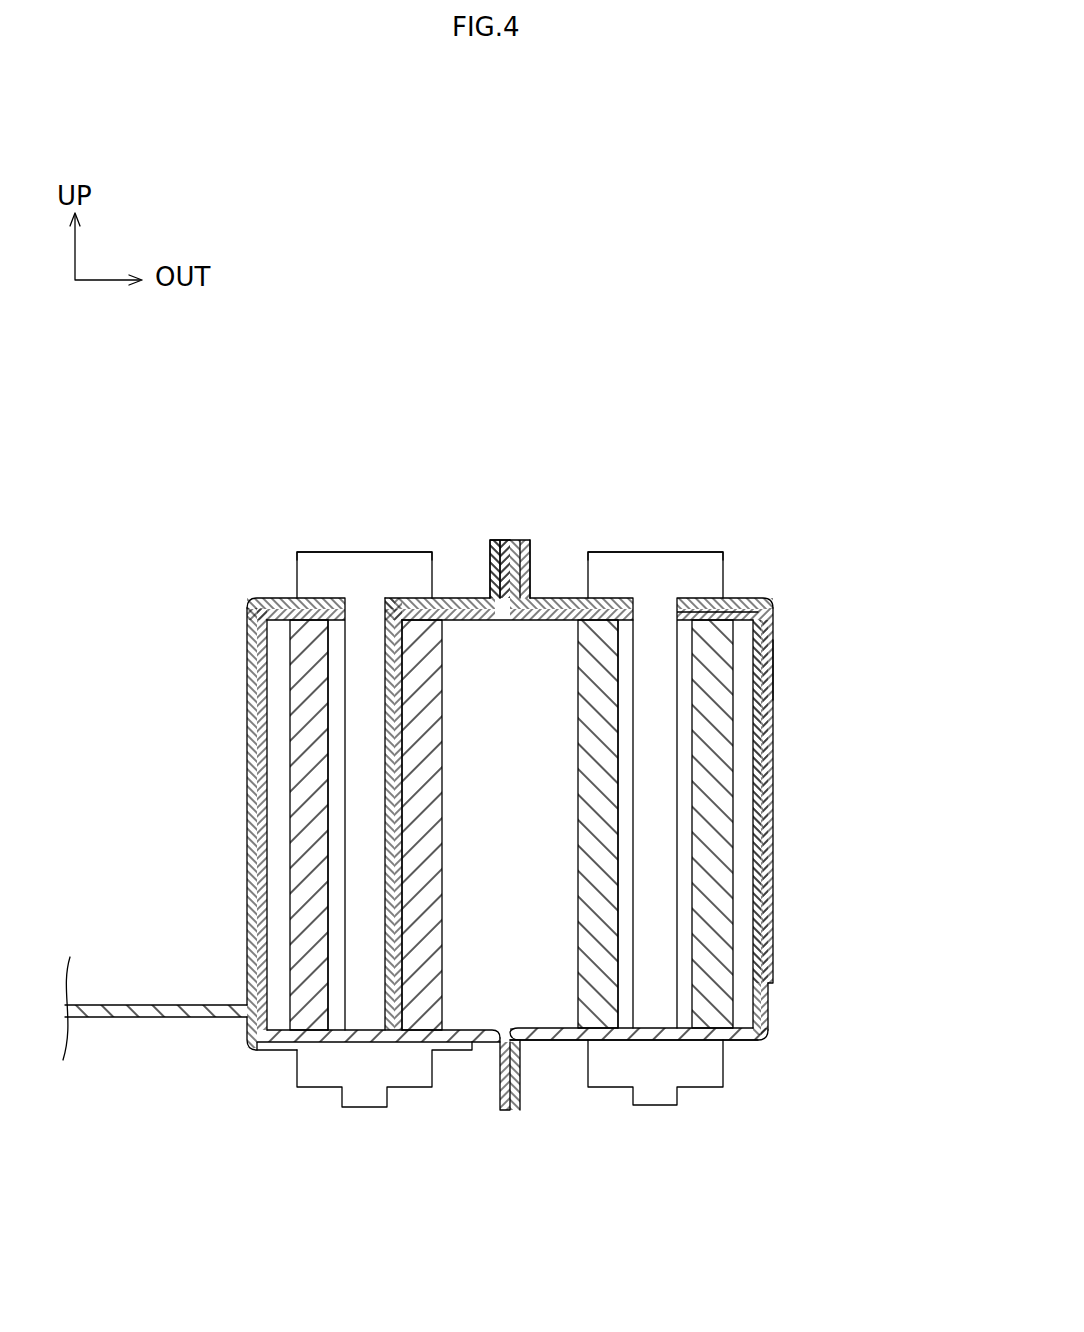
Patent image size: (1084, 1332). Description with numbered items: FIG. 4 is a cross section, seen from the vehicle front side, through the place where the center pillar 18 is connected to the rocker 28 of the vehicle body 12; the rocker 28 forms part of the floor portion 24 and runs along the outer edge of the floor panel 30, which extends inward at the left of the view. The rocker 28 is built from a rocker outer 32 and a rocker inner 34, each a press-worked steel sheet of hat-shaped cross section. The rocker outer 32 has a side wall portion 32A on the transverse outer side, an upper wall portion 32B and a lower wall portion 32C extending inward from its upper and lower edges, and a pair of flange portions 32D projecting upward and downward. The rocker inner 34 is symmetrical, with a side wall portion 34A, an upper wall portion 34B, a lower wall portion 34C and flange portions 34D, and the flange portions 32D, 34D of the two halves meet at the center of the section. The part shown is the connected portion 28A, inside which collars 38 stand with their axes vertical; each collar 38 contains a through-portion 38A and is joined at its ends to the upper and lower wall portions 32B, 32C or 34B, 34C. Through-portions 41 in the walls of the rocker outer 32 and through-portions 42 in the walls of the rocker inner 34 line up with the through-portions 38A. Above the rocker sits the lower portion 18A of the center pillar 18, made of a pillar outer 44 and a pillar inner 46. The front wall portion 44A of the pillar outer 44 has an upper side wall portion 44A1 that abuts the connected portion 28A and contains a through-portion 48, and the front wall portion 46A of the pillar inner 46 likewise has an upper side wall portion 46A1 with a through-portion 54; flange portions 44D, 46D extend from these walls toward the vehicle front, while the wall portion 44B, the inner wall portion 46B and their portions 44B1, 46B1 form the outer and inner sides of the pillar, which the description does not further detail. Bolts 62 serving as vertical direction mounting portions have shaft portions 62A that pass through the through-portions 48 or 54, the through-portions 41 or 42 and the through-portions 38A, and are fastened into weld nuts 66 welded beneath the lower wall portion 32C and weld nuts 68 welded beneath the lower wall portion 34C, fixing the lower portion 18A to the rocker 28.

The vehicle body 12 is at (751, 386).
The center pillar 18 is at (854, 689).
The lower portion 18A is at (773, 728).
The floor portion 24 is at (106, 753).
The rocker 28 is at (484, 843).
The connected portion 28A is at (742, 1041).
The floor panel 30 is at (96, 1017).
The rocker outer 32 is at (715, 785).
The side wall portion 32A is at (765, 1001).
The upper wall portion 32B is at (532, 622).
The lower wall portion 32C is at (550, 1030).
The flange portions 32D is at (512, 540).
The rocker inner 34 is at (377, 827).
The side wall portion 34A is at (270, 716).
The upper wall portion 34B is at (467, 620).
The lower wall portion 34C is at (475, 1030).
The flange portions 34D is at (506, 540).
The collar 38 is at (477, 825).
The through-portion 38A is at (620, 822).
The through-portions 41 is at (680, 598).
The through-portions 42 is at (342, 602).
The pillar outer 44 is at (740, 750).
The front wall portion 44A is at (823, 813).
The upper side wall portion 44A1 is at (748, 598).
The side wall of first cover member 44B is at (862, 795).
The side wall portion of first cover member 44B1 is at (773, 785).
The flange portion 44D is at (532, 592).
The pillar inner 46 is at (277, 774).
The front wall portion 46A is at (206, 791).
The upper side wall portion 46A1 is at (338, 594).
The inner wall portion 46B is at (171, 829).
The side wall portion of second cover member 46B1 is at (247, 828).
The flange portion 46D is at (490, 586).
The through-portion 48 is at (675, 590).
The through-portion 54 is at (352, 591).
The bolt 62 is at (331, 541).
The shaft portion 62A is at (362, 770).
The weld nut 66 is at (713, 1067).
The weld nut 68 is at (327, 1072).